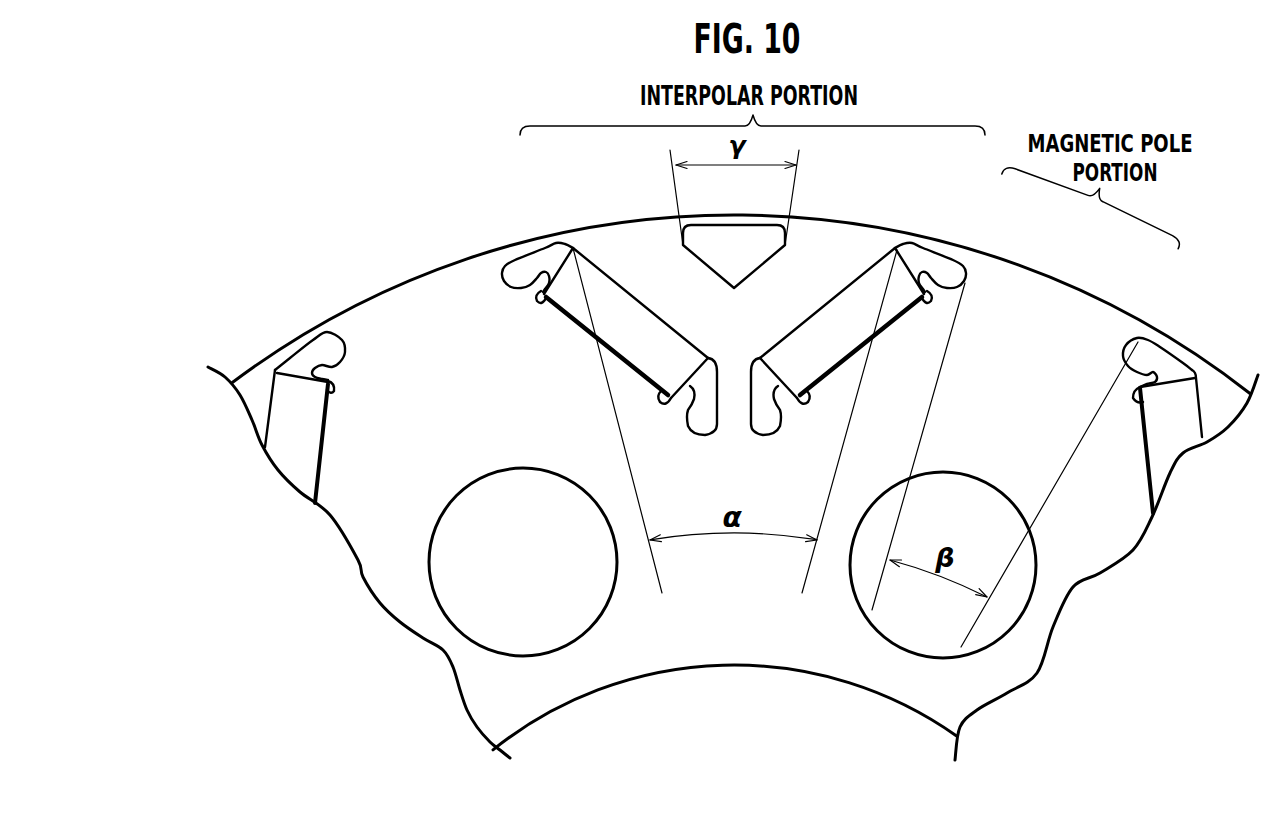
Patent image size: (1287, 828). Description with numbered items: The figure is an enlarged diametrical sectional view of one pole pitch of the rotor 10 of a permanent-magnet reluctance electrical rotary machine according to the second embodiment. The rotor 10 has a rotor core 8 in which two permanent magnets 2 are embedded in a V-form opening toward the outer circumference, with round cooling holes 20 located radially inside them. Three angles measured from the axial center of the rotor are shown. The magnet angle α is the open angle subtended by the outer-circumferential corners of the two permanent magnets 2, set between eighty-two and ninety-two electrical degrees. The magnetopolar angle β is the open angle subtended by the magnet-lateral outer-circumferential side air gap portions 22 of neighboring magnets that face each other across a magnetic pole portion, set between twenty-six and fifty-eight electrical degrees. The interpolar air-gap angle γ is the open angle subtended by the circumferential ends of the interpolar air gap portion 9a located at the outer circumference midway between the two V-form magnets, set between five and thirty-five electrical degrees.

The rotor 10 is at (370, 295).
The magnet-lateral outer-circumferential side air gap portion 22 is at (925, 260).
The interpolar air gap portion 9a is at (725, 272).
The permanent magnet 2 is at (567, 303).
The cooling hole 20 is at (473, 581).
The rotor core 8 is at (730, 632).